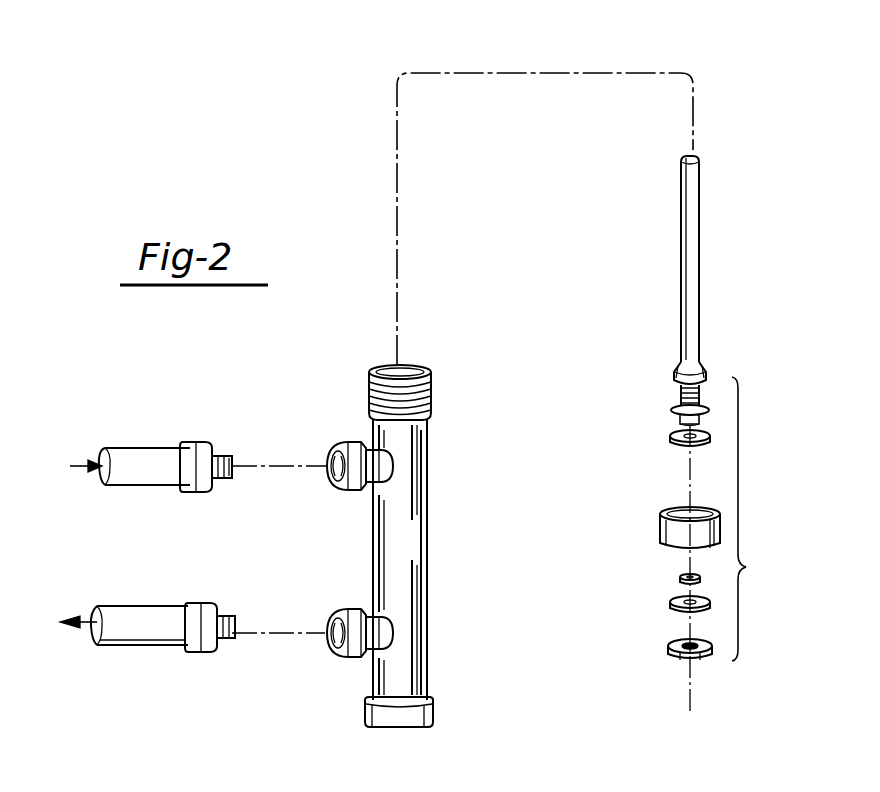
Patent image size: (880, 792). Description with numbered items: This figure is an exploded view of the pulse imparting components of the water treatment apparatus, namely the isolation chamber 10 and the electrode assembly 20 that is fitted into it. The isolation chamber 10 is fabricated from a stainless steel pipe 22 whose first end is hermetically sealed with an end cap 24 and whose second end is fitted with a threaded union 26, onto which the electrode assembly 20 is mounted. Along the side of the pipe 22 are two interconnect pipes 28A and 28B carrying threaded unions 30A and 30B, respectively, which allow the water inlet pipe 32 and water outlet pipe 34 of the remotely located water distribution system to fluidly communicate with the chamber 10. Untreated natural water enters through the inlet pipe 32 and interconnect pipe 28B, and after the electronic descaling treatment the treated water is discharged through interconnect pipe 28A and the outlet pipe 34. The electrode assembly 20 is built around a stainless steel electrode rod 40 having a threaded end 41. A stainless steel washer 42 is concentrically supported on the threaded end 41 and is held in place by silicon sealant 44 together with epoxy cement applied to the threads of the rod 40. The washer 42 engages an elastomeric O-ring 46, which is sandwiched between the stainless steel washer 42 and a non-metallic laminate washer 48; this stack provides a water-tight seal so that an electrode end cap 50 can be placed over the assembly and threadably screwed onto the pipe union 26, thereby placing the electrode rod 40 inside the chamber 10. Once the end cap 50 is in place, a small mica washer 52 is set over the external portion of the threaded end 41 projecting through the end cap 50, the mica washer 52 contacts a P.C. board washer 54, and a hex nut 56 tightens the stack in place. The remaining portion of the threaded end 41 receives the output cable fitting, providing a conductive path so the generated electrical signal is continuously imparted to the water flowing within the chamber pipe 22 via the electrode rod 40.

The isolation chamber 10 is at (445, 648).
The electrode assembly 20 is at (735, 112).
The stainless steel pipe 22 is at (416, 520).
The end cap 24 is at (378, 726).
The threaded union 26 is at (430, 386).
The interconnect pipe 28A is at (375, 652).
The interconnect pipe 28B is at (378, 486).
The threaded union 30A is at (333, 612).
The threaded union 30B is at (336, 447).
The water inlet pipe 32 is at (138, 454).
The water outlet pipe 34 is at (137, 633).
The electrode rod 40 is at (700, 250).
The threaded end 41 is at (657, 418).
The stainless steel washer 42 is at (680, 386).
The silicon sealant 44 is at (706, 367).
The elastomeric O-ring 46 is at (672, 410).
The non-metallic laminate washer 48 is at (672, 441).
The electrode end cap 50 is at (660, 532).
The mica washer 52 is at (680, 580).
The P.C. board washer 54 is at (672, 604).
The hex nut 56 is at (668, 652).